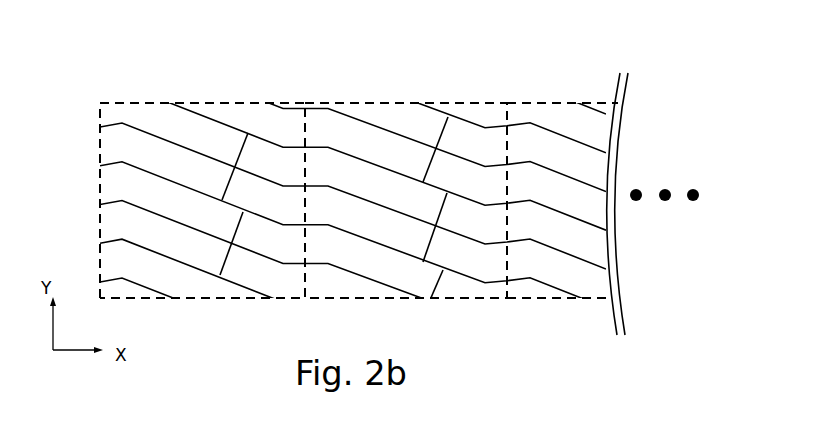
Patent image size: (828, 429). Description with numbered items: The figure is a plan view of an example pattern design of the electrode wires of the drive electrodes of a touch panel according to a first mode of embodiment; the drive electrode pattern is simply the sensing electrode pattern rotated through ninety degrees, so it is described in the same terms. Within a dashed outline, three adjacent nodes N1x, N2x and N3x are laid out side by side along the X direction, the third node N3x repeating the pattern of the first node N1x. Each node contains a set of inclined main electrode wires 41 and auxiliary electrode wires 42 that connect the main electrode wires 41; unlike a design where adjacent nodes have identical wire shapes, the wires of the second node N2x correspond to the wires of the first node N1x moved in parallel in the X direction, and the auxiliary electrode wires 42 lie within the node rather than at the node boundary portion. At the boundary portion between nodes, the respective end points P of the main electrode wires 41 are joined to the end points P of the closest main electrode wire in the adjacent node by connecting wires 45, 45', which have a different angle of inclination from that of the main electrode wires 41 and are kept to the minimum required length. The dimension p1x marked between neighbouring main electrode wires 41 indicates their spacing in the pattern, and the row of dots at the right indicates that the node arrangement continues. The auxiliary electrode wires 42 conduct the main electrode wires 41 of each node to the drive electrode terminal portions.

The first column region of the pattern N1x is at (140, 103).
The second column region of the pattern N2x is at (356, 102).
The third column region of the pattern (equal to N1x) N3x is at (556, 102).
The main electrode wire 41 is at (178, 146).
The auxiliary electrode wire 42 is at (232, 168).
The cell edge 45 is at (234, 154).
The cell edge junction 45' is at (460, 163).
The end point P is at (283, 149).
The pitch in x direction p1x is at (168, 182).